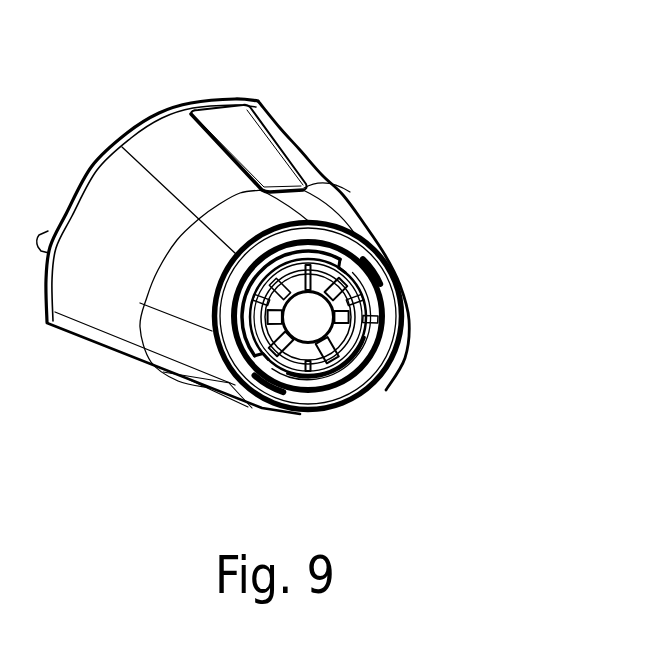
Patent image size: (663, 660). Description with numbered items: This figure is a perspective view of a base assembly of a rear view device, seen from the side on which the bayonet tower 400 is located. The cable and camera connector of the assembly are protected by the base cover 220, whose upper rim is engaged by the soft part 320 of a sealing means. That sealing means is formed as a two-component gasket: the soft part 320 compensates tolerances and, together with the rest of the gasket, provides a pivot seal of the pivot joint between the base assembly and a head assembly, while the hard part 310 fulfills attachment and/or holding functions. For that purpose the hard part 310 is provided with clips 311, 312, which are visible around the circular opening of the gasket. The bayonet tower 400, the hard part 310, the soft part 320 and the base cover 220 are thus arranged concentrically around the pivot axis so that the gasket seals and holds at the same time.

The base cover 220 is at (303, 143).
The hard part 310 is at (320, 394).
The clip 311 is at (385, 278).
The clip 312 is at (247, 410).
The soft part 320 is at (382, 382).
The bayonet tower 400 is at (390, 365).